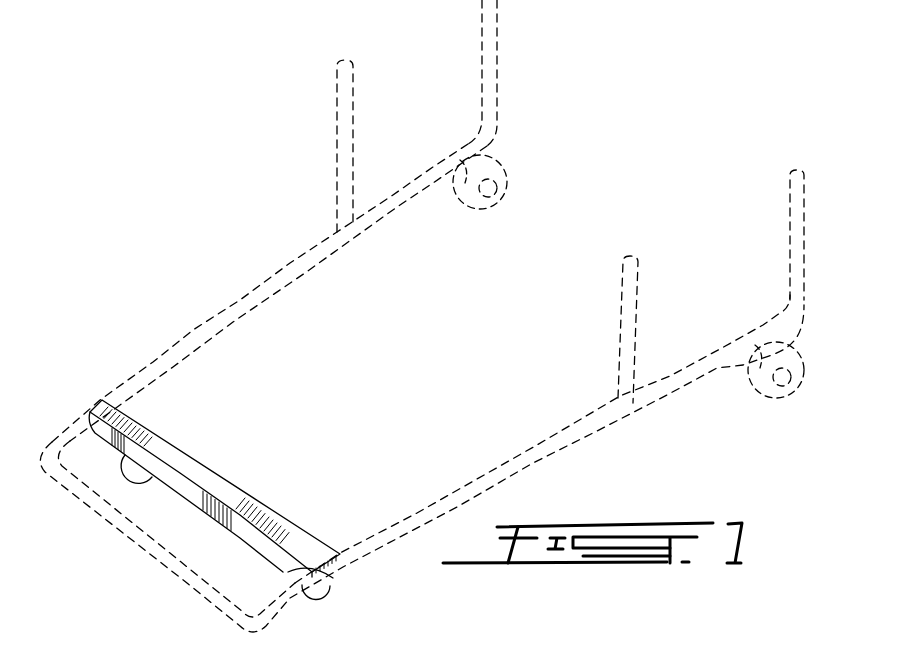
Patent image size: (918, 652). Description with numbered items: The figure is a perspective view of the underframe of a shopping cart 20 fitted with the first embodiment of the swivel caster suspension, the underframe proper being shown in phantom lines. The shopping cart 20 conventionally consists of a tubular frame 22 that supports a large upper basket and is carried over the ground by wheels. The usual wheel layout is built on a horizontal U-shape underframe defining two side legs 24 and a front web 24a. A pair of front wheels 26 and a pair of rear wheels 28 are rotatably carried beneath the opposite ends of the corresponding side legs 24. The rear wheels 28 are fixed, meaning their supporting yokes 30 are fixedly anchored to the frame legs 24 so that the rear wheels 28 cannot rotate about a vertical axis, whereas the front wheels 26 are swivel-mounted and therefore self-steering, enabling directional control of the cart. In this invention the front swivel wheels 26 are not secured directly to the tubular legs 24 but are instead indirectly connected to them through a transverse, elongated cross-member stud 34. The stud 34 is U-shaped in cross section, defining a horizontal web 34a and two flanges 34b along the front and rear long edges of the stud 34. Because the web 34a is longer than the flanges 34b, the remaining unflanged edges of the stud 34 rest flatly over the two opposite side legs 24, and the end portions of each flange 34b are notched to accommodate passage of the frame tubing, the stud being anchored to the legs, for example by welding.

The shopping cart 20 is at (253, 252).
The tubular frame 22 is at (207, 323).
The side legs 24 is at (155, 362).
The front web 24a is at (170, 567).
The front wheels 26 is at (130, 477).
The rear wheels 28 is at (486, 208).
The supporting yokes 30 is at (463, 182).
The cross-member stud 34 is at (205, 462).
The horizontal web 34a is at (245, 493).
The flanges 34b is at (263, 548).